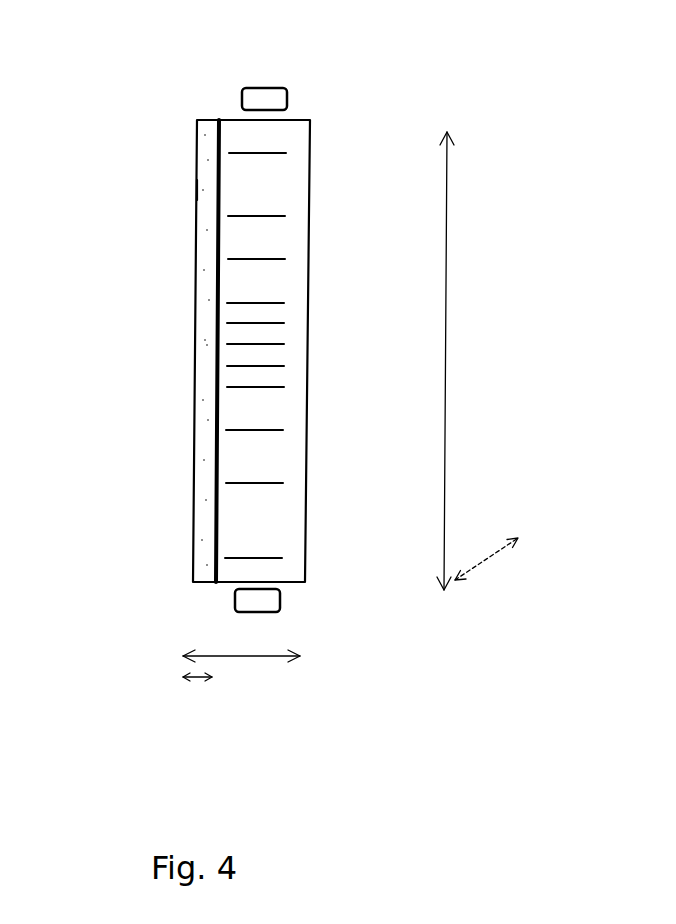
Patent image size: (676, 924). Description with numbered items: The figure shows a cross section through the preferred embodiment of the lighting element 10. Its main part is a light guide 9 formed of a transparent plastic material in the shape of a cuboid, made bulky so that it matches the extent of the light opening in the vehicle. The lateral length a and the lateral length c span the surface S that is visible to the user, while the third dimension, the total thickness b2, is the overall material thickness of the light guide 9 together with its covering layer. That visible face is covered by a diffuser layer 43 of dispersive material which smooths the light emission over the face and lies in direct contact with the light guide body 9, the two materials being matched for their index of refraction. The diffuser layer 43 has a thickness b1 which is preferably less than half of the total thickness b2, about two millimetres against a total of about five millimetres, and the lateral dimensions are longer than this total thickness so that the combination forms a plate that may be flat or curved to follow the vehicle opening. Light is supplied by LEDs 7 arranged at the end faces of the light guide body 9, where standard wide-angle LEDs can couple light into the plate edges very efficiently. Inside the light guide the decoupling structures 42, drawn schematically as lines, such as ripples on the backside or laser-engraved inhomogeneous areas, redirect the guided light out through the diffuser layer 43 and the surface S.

The LED 7 is at (260, 88).
The light guide 9 is at (307, 335).
The lighting element 10 is at (114, 612).
The decoupling structures 42 is at (238, 488).
The diffuser layer 43 is at (195, 328).
The surface S is at (197, 190).
The lateral length a is at (478, 361).
The diffuser layer thickness b1 is at (198, 682).
The total thickness b2 is at (252, 658).
The lateral length c is at (496, 545).